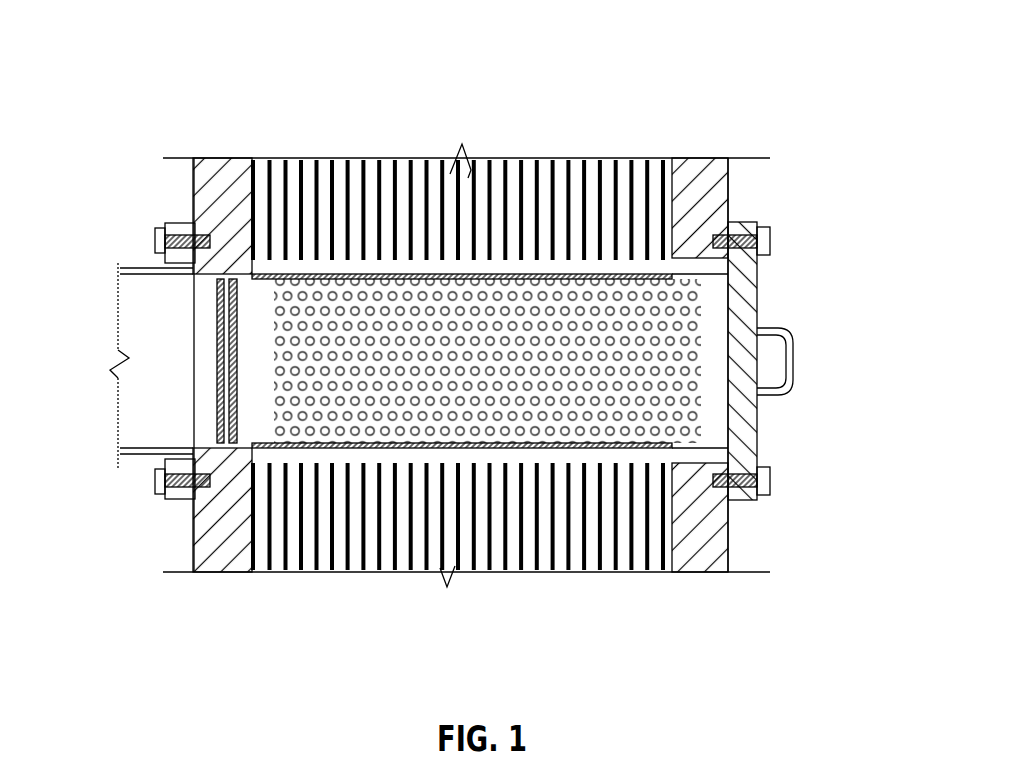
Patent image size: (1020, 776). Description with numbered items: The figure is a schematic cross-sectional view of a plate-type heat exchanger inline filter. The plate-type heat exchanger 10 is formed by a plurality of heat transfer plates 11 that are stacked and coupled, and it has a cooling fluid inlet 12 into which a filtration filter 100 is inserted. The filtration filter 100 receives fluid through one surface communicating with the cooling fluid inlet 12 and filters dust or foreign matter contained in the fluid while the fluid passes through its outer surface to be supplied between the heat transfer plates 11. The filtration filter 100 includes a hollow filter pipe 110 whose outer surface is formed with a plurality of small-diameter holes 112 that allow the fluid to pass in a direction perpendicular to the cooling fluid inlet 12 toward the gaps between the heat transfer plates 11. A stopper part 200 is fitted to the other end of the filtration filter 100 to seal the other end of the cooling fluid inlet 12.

The plate-type heat exchanger 10 is at (182, 190).
The heat transfer plates 11 is at (400, 180).
The cooling fluid inlet 12 is at (622, 272).
The filtration filter 100 is at (213, 314).
The filter pipe 110 is at (712, 299).
The small-diameter holes 112 is at (367, 413).
The stopper part 200 is at (758, 269).